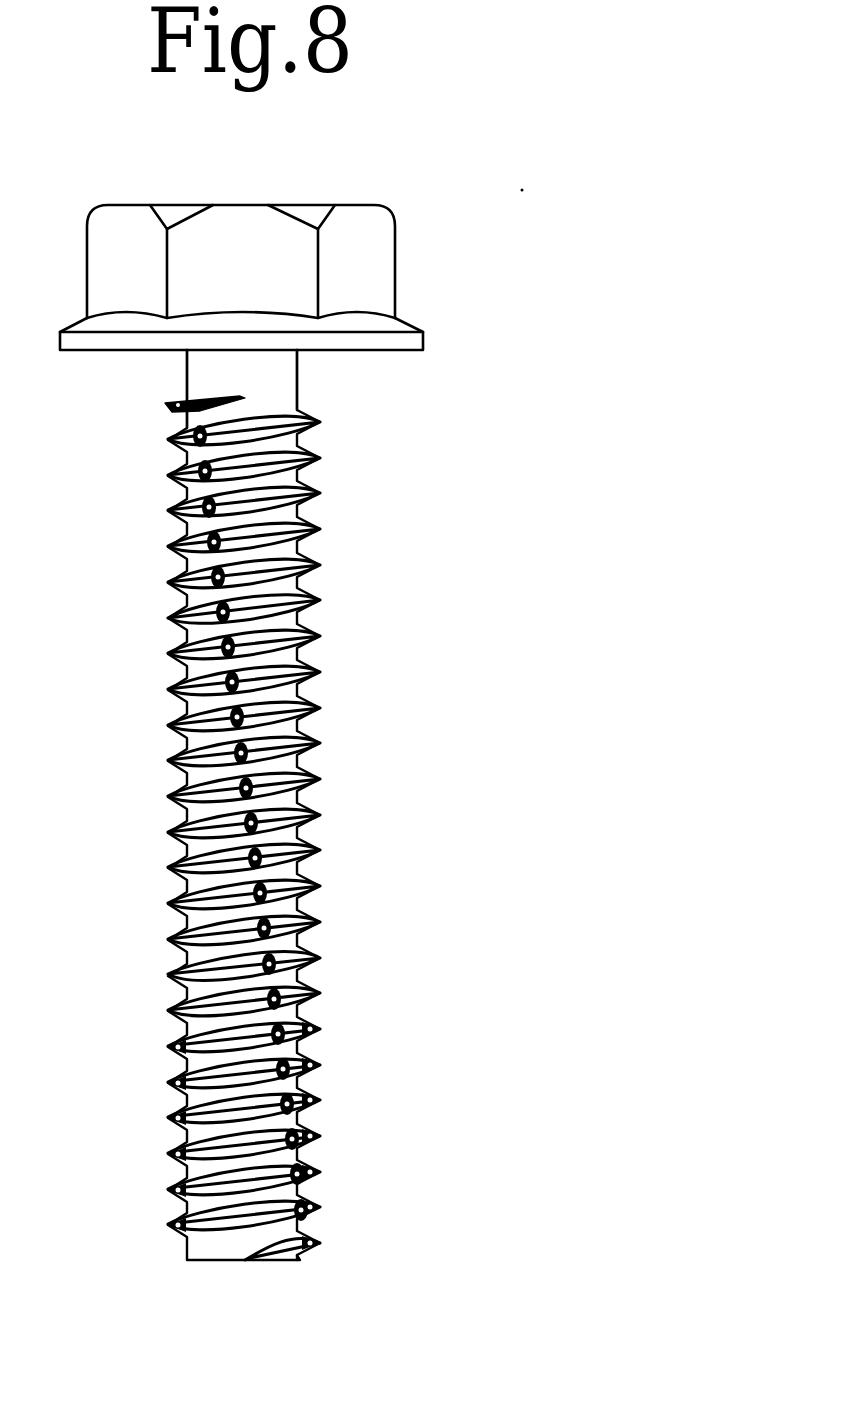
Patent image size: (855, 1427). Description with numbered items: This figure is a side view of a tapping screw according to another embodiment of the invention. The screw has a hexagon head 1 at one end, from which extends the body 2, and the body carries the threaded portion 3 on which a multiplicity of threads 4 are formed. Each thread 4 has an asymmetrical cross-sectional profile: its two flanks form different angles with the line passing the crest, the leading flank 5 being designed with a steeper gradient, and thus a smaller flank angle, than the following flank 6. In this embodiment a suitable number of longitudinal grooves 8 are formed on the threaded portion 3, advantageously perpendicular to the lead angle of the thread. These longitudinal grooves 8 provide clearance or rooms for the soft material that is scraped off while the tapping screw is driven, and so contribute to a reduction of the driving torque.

The head 1 is at (380, 260).
The body 2 is at (285, 390).
The threaded portion 3 is at (331, 805).
The thread 4 is at (320, 778).
The leading flank 5 is at (322, 900).
The following flank 6 is at (320, 881).
The longitudinal groove 8 is at (250, 720).